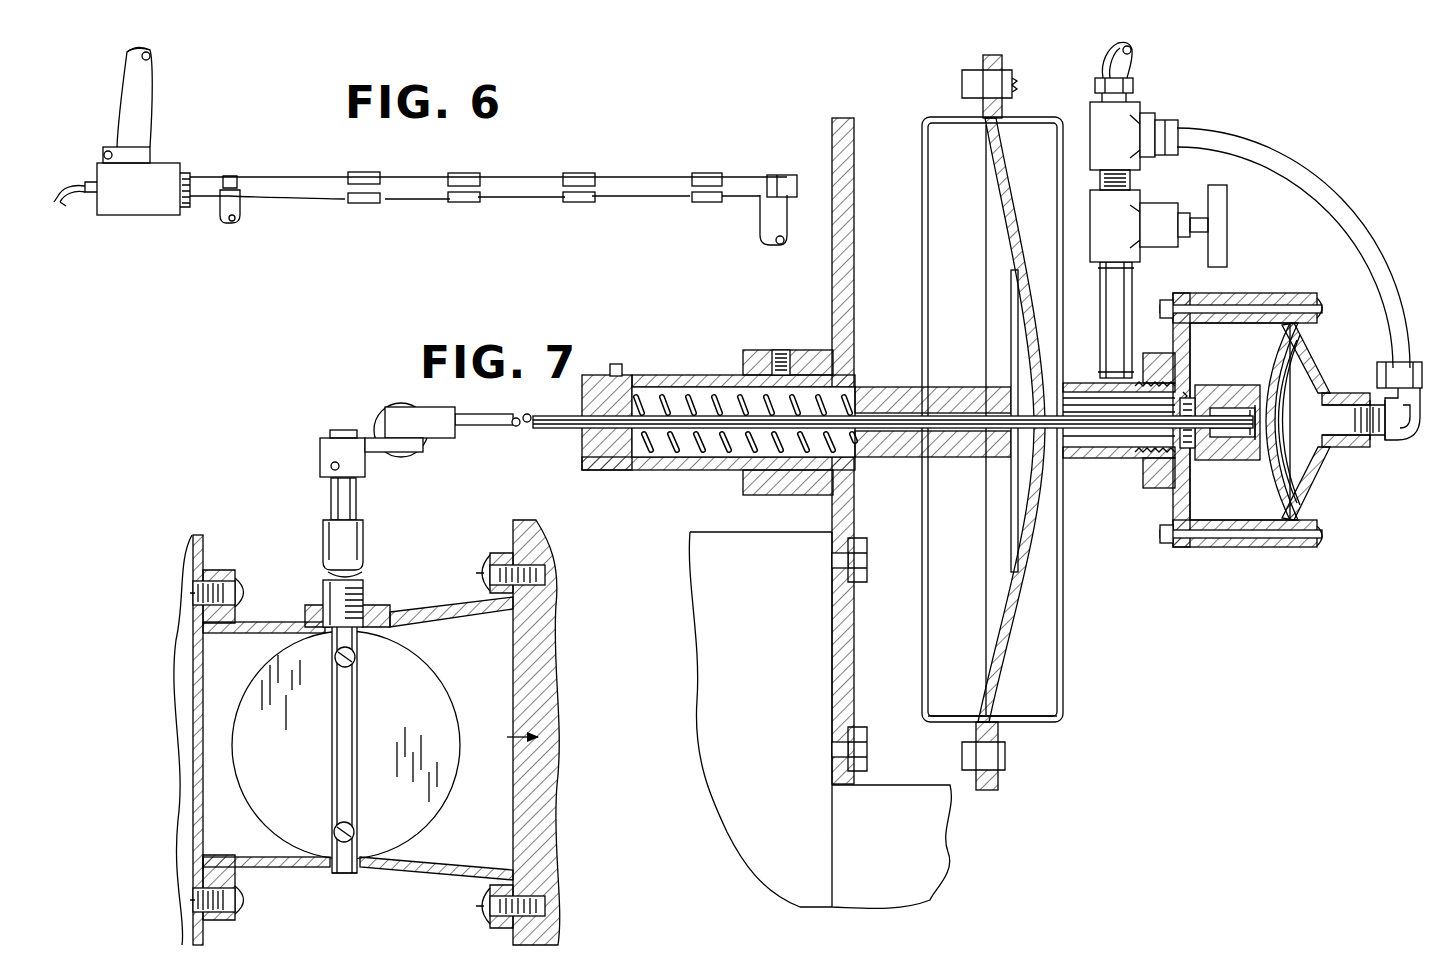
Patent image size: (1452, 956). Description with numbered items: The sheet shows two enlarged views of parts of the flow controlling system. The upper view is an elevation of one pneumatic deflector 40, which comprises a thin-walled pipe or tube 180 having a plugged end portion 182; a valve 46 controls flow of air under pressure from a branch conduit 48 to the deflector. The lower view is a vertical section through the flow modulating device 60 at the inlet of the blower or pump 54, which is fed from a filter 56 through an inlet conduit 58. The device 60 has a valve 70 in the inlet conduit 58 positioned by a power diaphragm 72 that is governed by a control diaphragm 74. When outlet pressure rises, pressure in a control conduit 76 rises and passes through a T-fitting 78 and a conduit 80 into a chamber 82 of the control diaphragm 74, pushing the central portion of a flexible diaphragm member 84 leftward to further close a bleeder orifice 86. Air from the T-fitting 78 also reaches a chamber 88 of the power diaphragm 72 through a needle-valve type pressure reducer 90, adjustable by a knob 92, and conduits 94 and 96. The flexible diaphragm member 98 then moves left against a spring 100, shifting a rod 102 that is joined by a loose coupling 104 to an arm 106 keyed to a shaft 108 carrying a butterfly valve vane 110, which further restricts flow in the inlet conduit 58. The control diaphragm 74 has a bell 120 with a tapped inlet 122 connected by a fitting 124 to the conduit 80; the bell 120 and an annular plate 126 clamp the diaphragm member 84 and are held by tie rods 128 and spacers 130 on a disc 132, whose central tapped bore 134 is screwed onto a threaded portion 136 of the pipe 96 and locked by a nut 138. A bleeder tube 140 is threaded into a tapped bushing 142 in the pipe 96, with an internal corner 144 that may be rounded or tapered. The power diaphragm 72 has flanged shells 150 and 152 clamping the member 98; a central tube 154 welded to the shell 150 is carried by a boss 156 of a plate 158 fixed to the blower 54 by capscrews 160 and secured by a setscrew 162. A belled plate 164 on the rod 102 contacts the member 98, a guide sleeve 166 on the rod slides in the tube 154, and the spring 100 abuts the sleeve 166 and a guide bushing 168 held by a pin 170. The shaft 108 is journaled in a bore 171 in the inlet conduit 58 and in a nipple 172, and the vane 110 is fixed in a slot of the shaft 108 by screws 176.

In FIG. 6, the pneumatic deflector 40 is at (620, 163).
In FIG. 6, the valve 46 is at (140, 198).
In FIG. 6, the branch conduit 48 is at (140, 88).
In FIG. 6, the thin-walled pipe or tube 180 is at (403, 188).
In FIG. 6, the plugged end portion 182 is at (782, 181).
In FIG. 7, the blower or pump 54 is at (512, 532).
In FIG. 7, the filter 56 is at (205, 542).
In FIG. 7, the inlet conduit 58 is at (258, 628).
In FIG. 7, the flow modulating device 60 is at (1162, 596).
In FIG. 7, the valve 70 is at (382, 578).
In FIG. 7, the power diaphragm 72 is at (1075, 565).
In FIG. 7, the control diaphragm 74 is at (1302, 560).
In FIG. 7, the control conduit 76 is at (1122, 70).
In FIG. 7, the T-fitting 78 is at (1135, 108).
In FIG. 7, the conduit 80 is at (1355, 183).
In FIG. 7, the chamber 82 is at (1305, 465).
In FIG. 7, the flexible diaphragm member 84 is at (1282, 380).
In FIG. 7, the bleeder orifice 86 is at (1258, 323).
In FIG. 7, the chamber 88 is at (1040, 680).
In FIG. 7, the flow-restricting pressure reducer 90 is at (1160, 205).
In FIG. 7, the knob 92 is at (1222, 205).
In FIG. 7, the conduit 94 is at (1102, 304).
In FIG. 7, the conduit (pipe) 96 is at (1098, 458).
In FIG. 7, the flexible diaphragm member 98 is at (1030, 604).
In FIG. 7, the spring 100 is at (690, 398).
In FIG. 7, the rod 102 is at (548, 418).
In FIG. 7, the loose coupling 104 is at (395, 458).
In FIG. 7, the arm 106 is at (370, 440).
In FIG. 7, the shaft 108 is at (333, 497).
In FIG. 7, the butterfly valve vane 110 is at (378, 826).
In FIG. 7, the bell 120 is at (1308, 480).
In FIG. 7, the tapped inlet 122 is at (1340, 393).
In FIG. 7, the fitting 124 is at (1408, 440).
In FIG. 7, the annular plate 126 is at (1268, 548).
In FIG. 7, the tie rods 128 is at (1312, 298).
In FIG. 7, the spacers 130 is at (1218, 386).
In FIG. 7, the disc 132 is at (1173, 512).
In FIG. 7, the central tapped bore 134 is at (1202, 380).
In FIG. 7, the threaded portion 136 is at (1152, 352).
In FIG. 7, the nut 138 is at (1160, 472).
In FIG. 7, the bleeder tube 140 is at (1238, 440).
In FIG. 7, the tapped bushing 142 is at (1232, 438).
In FIG. 7, the internal corner 144 is at (1245, 440).
In FIG. 7, the flanged shell 150 is at (925, 684).
In FIG. 7, the flanged shell 152 is at (1036, 724).
In FIG. 7, the central tube 154 is at (384, 608).
In FIG. 7, the boss 156 is at (760, 358).
In FIG. 7, the plate 158 is at (842, 625).
In FIG. 7, the capscrews 160 is at (860, 752).
In FIG. 7, the setscrew 162 is at (782, 356).
In FIG. 7, the belled plate 164 is at (1030, 515).
In FIG. 7, the guide sleeve 166 is at (890, 395).
In FIG. 7, the guide bushing 168 is at (598, 378).
In FIG. 7, the pin 170 is at (620, 372).
In FIG. 7, the bore 171 is at (352, 875).
In FIG. 7, the nipple 172 is at (357, 542).
In FIG. 7, the screws 176 is at (341, 826).